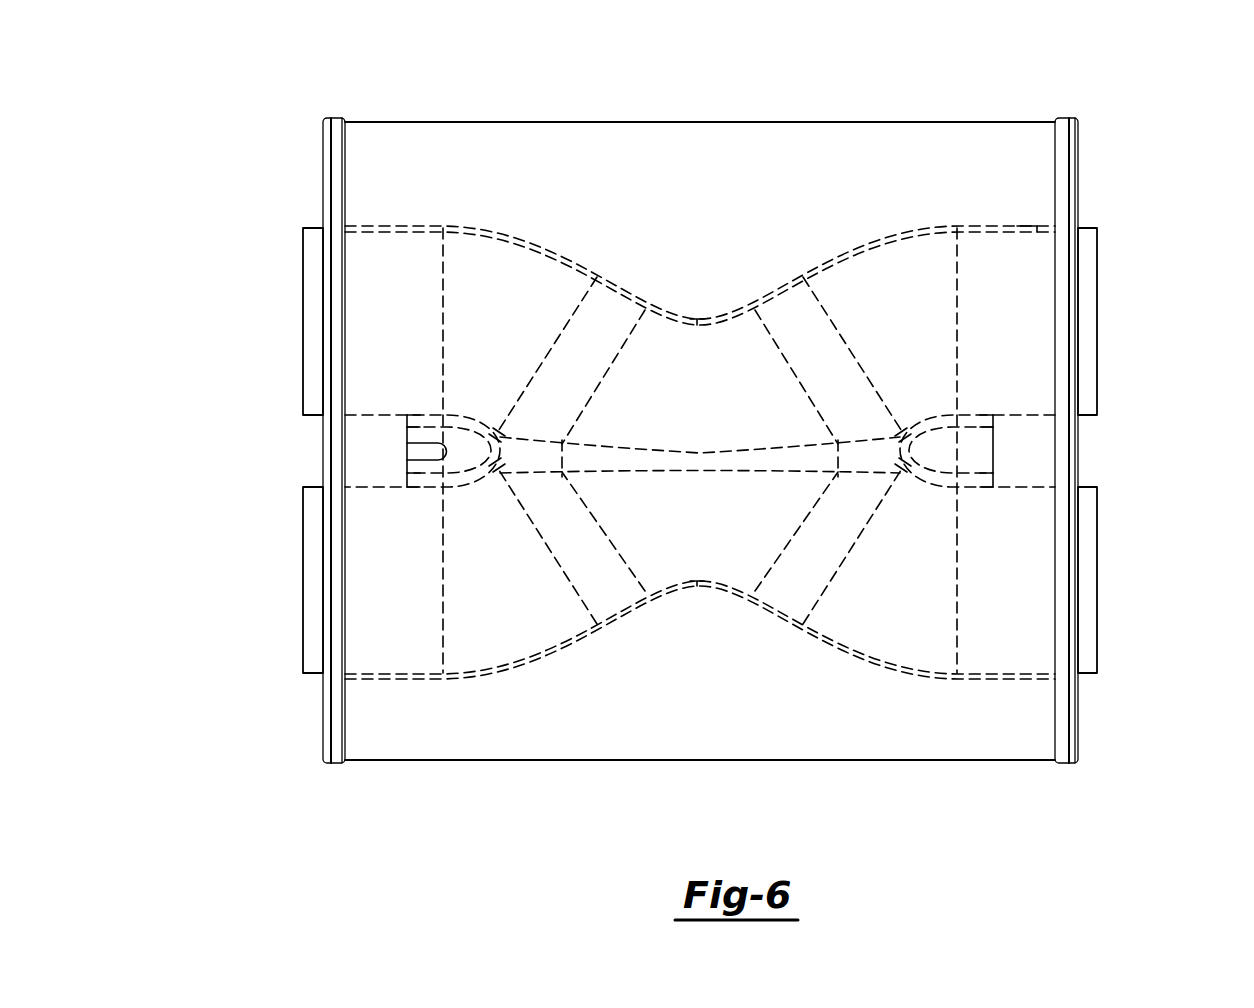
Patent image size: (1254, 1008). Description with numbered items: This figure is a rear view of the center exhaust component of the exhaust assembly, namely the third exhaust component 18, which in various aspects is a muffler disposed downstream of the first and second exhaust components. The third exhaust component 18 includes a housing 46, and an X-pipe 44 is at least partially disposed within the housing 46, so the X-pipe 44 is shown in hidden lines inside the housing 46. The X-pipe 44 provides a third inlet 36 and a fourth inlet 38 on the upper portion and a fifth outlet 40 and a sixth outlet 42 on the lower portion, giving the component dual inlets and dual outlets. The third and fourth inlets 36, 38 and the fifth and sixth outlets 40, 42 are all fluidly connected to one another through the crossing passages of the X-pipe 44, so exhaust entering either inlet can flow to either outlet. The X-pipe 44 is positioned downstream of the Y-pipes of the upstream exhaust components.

The third exhaust component 18 is at (375, 84).
The third inlet 36 is at (1097, 291).
The fourth inlet 38 is at (303, 268).
The fifth outlet 40 is at (1097, 593).
The sixth outlet 42 is at (303, 545).
The X-pipe 44 is at (402, 226).
The housing 46 is at (770, 122).